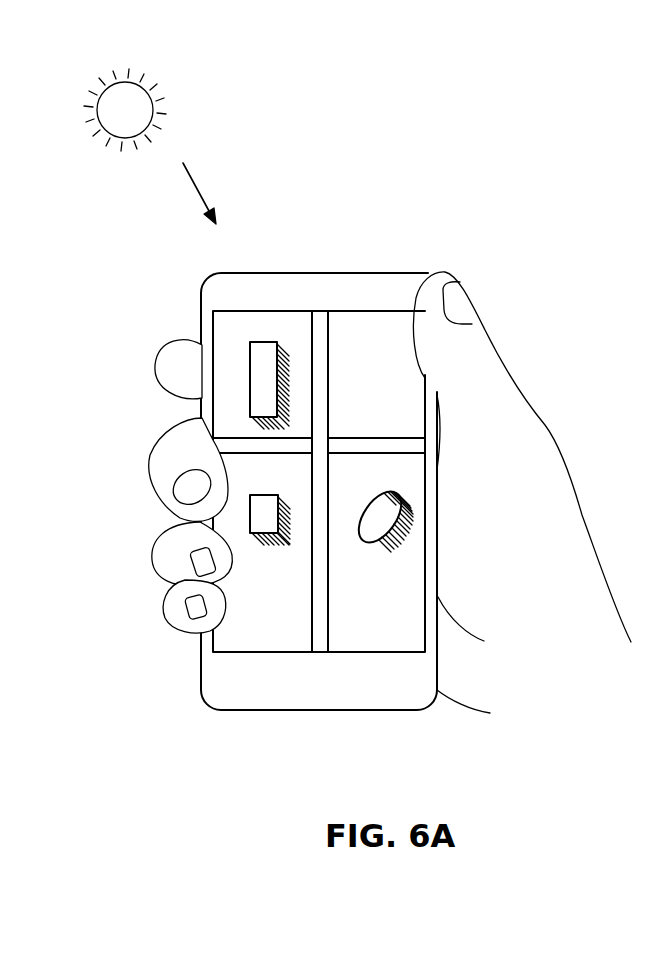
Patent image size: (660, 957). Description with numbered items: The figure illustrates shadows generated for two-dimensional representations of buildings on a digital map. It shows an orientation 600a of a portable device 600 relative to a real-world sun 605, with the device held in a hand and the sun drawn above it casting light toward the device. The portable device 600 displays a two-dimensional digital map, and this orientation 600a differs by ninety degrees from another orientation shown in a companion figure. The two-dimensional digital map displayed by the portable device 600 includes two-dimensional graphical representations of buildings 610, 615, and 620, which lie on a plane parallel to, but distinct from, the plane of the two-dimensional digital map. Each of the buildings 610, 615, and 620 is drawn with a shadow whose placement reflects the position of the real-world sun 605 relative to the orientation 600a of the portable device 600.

The orientation 600a is at (387, 133).
The portable device 600 is at (340, 273).
The real-world sun 605 is at (150, 82).
The 2D graphical representation of building 610 is at (265, 341).
The 2D graphical representation of building 615 is at (250, 527).
The 2D graphical representation of building 620 is at (358, 530).